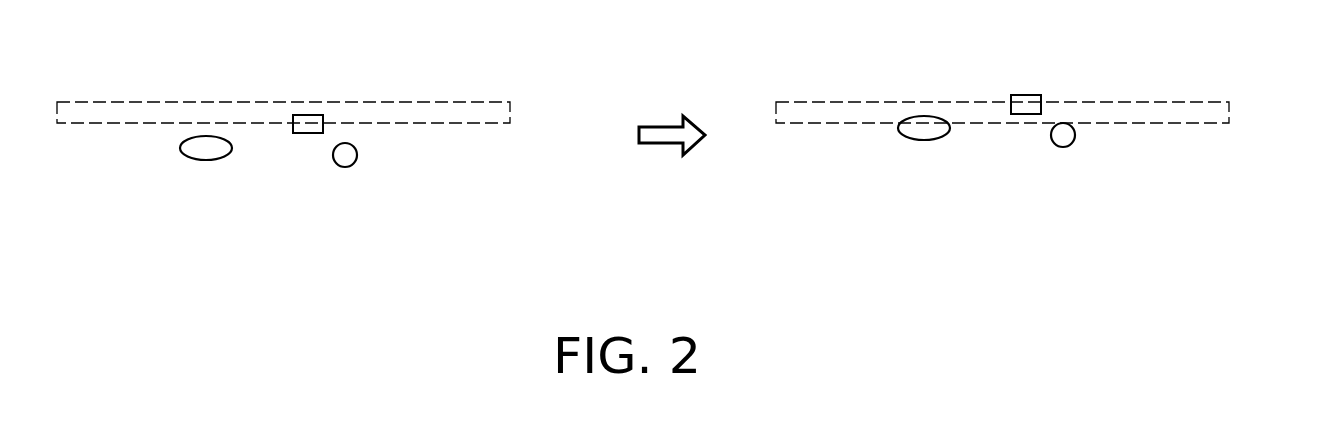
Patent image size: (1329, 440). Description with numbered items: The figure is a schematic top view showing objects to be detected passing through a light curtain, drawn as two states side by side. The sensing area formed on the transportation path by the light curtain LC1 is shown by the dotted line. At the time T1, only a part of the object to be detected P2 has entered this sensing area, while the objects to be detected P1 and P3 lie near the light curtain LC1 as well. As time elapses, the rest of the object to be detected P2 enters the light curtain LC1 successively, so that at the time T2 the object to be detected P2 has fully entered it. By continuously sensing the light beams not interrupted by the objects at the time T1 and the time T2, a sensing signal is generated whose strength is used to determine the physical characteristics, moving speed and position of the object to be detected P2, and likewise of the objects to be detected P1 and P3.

The light curtain LC1 is at (510, 102).
The object to be detected P1 is at (345, 167).
The object to be detected P2 is at (305, 133).
The object to be detected P3 is at (180, 150).
The time T1 is at (307, 30).
The time T2 is at (1030, 30).